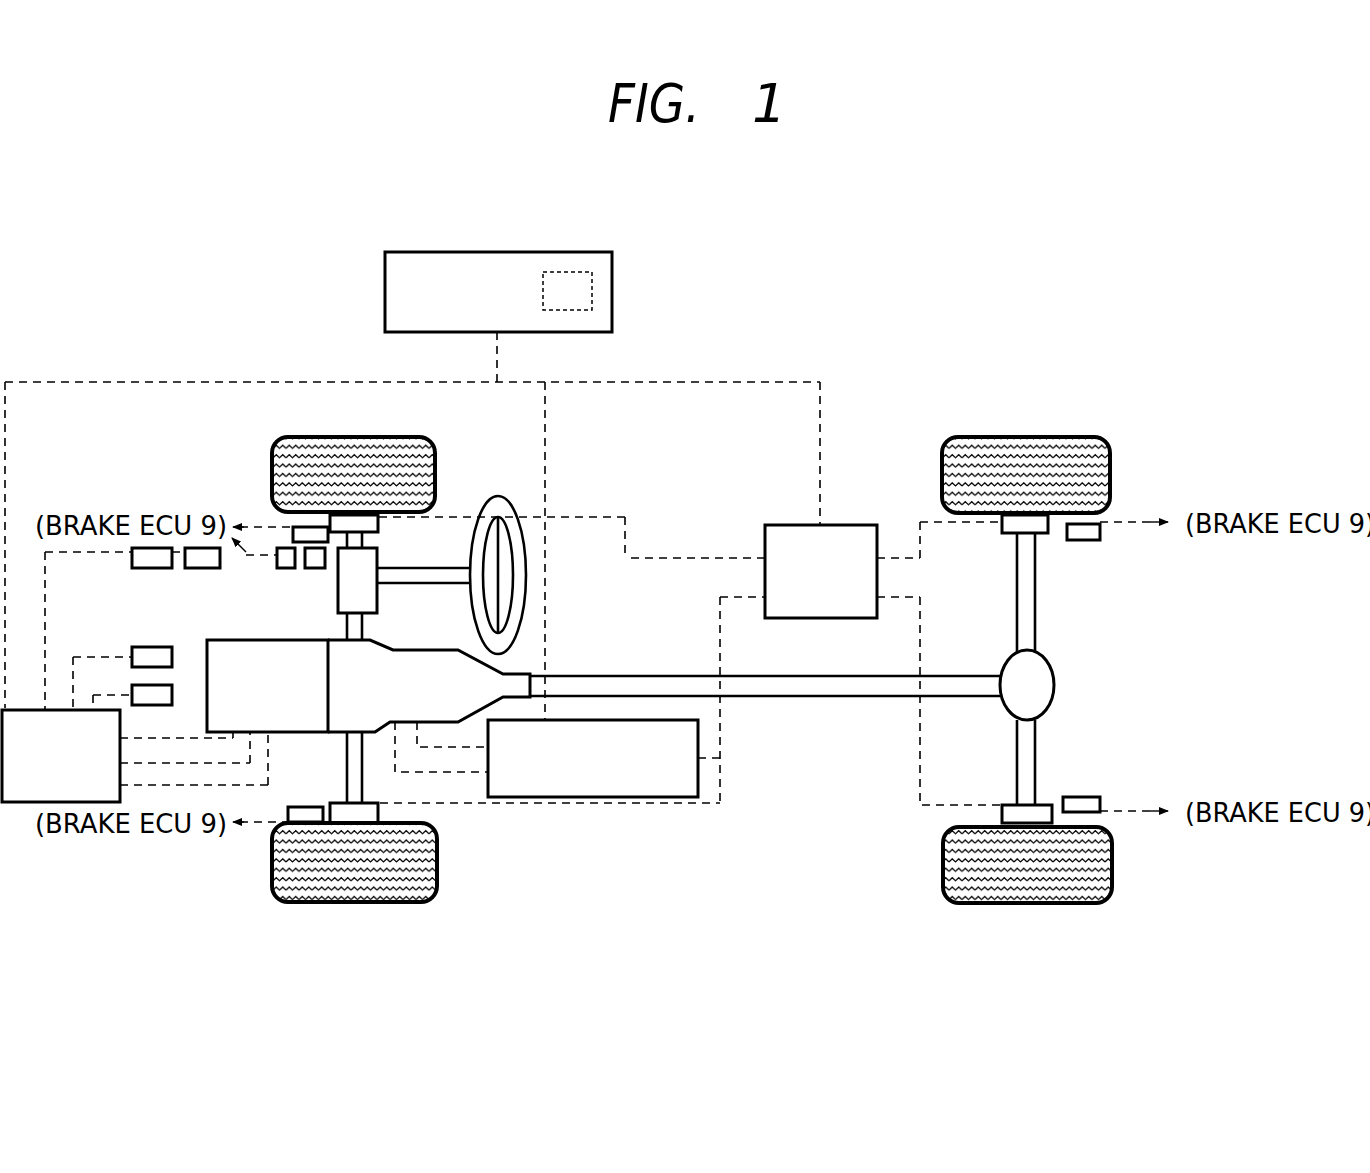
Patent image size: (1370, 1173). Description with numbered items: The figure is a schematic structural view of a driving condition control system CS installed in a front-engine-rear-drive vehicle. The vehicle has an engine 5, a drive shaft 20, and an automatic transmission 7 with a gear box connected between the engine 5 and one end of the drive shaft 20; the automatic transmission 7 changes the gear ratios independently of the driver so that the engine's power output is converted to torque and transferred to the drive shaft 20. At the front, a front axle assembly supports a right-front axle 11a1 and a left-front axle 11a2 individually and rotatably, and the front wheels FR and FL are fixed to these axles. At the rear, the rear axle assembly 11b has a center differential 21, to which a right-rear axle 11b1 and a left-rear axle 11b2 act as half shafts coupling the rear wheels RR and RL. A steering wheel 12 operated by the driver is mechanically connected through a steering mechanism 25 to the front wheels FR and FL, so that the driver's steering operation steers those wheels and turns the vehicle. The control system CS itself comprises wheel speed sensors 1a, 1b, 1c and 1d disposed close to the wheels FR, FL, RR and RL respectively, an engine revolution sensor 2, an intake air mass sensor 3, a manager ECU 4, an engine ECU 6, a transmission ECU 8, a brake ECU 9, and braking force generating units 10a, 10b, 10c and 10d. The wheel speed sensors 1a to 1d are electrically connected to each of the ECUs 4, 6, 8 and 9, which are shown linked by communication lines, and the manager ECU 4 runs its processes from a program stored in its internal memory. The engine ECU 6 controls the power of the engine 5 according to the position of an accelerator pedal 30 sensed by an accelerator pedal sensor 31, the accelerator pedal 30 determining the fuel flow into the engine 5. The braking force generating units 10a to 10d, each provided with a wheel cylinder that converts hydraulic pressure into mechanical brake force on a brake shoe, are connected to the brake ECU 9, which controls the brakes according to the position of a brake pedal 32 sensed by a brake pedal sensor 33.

The wheel speed sensor 1a is at (293, 530).
The wheel speed sensor 1b is at (293, 808).
The wheel speed sensor 1c is at (1085, 540).
The wheel speed sensor 1d is at (1080, 797).
The engine revolution sensor 2 is at (145, 652).
The intake air mass sensor 3 is at (168, 693).
The manager ECU 4 is at (590, 252).
The engine 5 is at (238, 640).
The engine ECU 6 is at (27, 710).
The automatic transmission 7 is at (503, 673).
The transmission ECU 8 is at (637, 797).
The brake ECU 9 is at (853, 525).
The braking force generating unit 10a is at (378, 522).
The braking force generating unit 10b is at (337, 805).
The braking force generating unit 10c is at (1010, 533).
The braking force generating unit 10d is at (1010, 805).
The right-front axle 11a1 is at (360, 627).
The left-front axle 11a2 is at (355, 775).
The rear axle assembly 11b is at (1162, 632).
The right-rear axle 11b1 is at (1030, 600).
The left-rear axle 11b2 is at (1032, 755).
The steering wheel 12 is at (498, 507).
The drive shaft 20 is at (845, 697).
The center differential 21 is at (1045, 683).
The steering mechanism 25 is at (377, 595).
The accelerator pedal 30 is at (196, 563).
The accelerator pedal sensor 31 is at (145, 563).
The brake pedal 32 is at (315, 565).
The brake pedal sensor 33 is at (283, 565).
The driving condition control system CS is at (1040, 328).
The front right wheel FR is at (407, 448).
The front left wheel FL is at (398, 893).
The rear right wheel RR is at (1080, 453).
The rear left wheel RL is at (1080, 892).